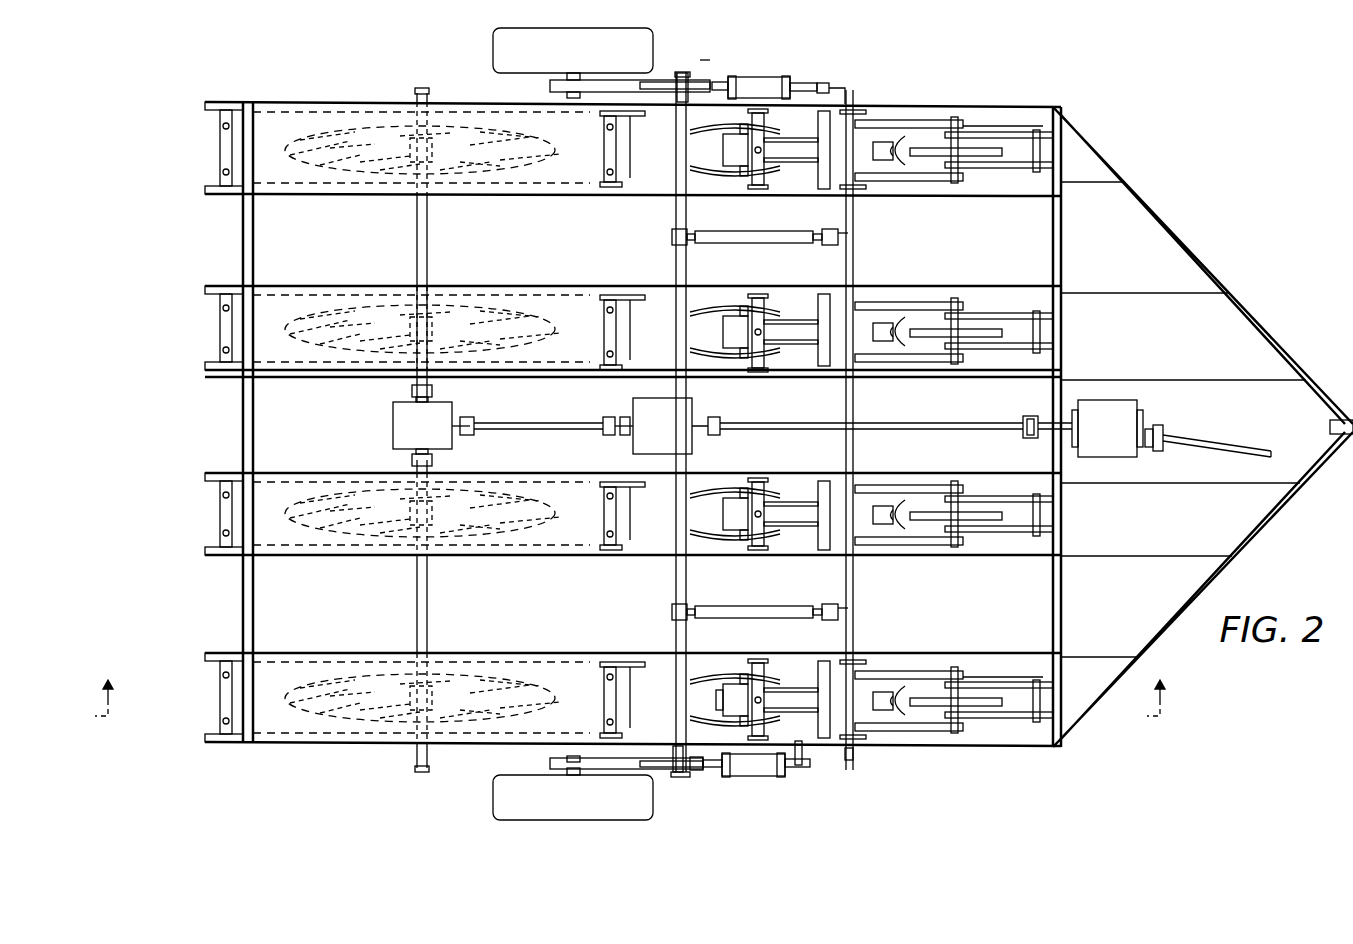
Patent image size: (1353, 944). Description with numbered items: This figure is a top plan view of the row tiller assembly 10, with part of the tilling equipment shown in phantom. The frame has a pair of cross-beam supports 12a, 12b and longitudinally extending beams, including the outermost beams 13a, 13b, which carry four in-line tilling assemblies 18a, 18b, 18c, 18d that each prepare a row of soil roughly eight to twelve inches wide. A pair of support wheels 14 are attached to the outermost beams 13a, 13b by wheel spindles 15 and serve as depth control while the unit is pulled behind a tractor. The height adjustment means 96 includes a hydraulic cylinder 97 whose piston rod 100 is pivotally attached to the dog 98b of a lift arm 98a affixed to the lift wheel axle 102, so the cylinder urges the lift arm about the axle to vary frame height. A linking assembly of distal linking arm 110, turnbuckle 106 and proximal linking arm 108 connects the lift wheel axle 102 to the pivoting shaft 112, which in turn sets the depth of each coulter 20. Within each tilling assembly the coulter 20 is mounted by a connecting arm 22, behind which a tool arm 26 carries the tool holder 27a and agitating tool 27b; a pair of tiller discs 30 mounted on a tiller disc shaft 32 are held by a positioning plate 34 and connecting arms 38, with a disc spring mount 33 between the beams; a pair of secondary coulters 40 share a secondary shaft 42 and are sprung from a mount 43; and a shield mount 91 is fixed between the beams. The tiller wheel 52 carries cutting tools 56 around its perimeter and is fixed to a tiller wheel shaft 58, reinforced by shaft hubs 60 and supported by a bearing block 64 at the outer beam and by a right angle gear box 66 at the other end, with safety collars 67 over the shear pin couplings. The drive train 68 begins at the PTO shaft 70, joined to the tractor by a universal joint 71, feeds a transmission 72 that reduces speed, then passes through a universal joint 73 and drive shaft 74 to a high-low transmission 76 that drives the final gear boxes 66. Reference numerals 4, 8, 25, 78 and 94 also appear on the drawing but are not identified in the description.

The section line 4- 4 is at (630, 686).
The hitch tongue frame 8 is at (1210, 268).
The row tiller assembly 10 is at (1063, 250).
The cross-beam support 12a is at (1057, 107).
The cross-beam support 12b is at (250, 102).
The outermost longitudinal beam 13a is at (338, 102).
The outermost longitudinal beam 13b is at (340, 195).
The support wheel 14 is at (510, 50).
The wheel spindle 15 is at (570, 73).
The tilling assembly 18a is at (182, 108).
The tilling assembly 18b is at (182, 292).
The tilling assembly 18c is at (182, 478).
The tilling assembly 18d is at (182, 658).
The coulter 20 is at (925, 157).
The connecting arm 22 is at (1020, 181).
The arm support bar 25 is at (990, 126).
The tool arm 26 is at (935, 125).
The tool holder 27a is at (885, 142).
The agitating tool 27b is at (890, 138).
The tiller disc 30 is at (708, 172).
The tiller disc shaft 32 is at (716, 700).
The disc spring mount 33 is at (812, 104).
The positioning plate 34 is at (723, 150).
The connecting arm 38 is at (790, 165).
The secondary coulter 40 is at (665, 195).
The secondary shaft 42 is at (630, 185).
The mount 43 is at (600, 185).
The tiller wheel 52 is at (412, 176).
The cutting tool 56 is at (290, 160).
The tiller wheel shaft 58 is at (428, 262).
The shaft hub 60 is at (435, 165).
The bearing block 64 is at (418, 93).
The right angle gear box 66 is at (393, 428).
The safety collar 67 is at (412, 391).
The drive train 68 is at (488, 432).
The PTO shaft 70 is at (1205, 450).
The universal joint 71 is at (1158, 425).
The transmission 72 is at (1107, 428).
The universal joint 73 is at (985, 385).
The drive shaft 74 is at (752, 424).
The high-low transmission 76 is at (680, 440).
The cross shaft 78 is at (585, 420).
The shield mount 91 is at (218, 135).
The wheel assembly 94 is at (698, 64).
The height adjustment means 96 is at (760, 76).
The hydraulic cylinder 97 is at (800, 83).
The lift arm 98a is at (605, 80).
The dog 98b is at (660, 82).
The piston rod 100 is at (720, 82).
The lift wheel axle 102 is at (682, 72).
The turnbuckle 106 is at (770, 243).
The proximal linking arm 108 is at (848, 237).
The distal linking arm 110 is at (672, 242).
The pivoting shaft 112 is at (848, 205).